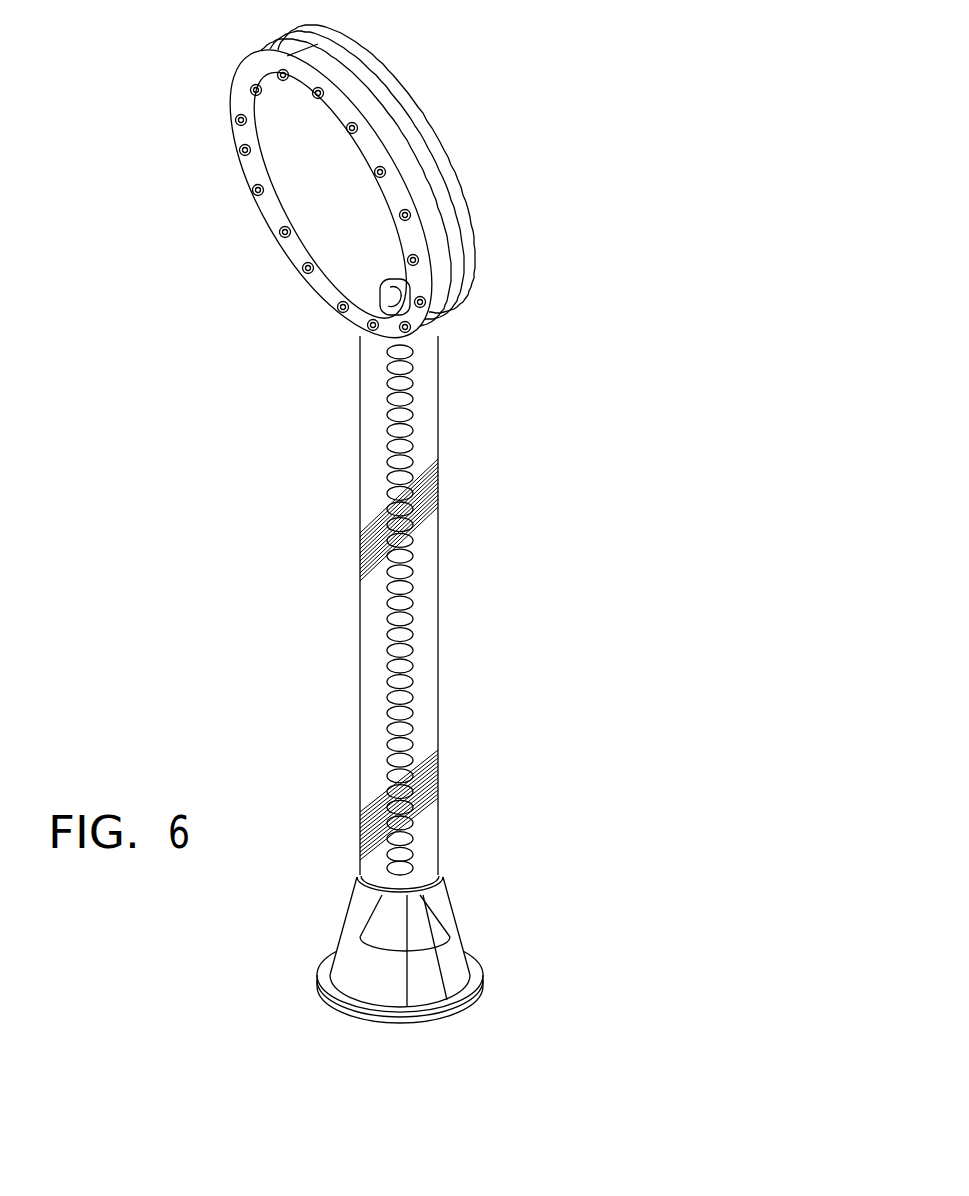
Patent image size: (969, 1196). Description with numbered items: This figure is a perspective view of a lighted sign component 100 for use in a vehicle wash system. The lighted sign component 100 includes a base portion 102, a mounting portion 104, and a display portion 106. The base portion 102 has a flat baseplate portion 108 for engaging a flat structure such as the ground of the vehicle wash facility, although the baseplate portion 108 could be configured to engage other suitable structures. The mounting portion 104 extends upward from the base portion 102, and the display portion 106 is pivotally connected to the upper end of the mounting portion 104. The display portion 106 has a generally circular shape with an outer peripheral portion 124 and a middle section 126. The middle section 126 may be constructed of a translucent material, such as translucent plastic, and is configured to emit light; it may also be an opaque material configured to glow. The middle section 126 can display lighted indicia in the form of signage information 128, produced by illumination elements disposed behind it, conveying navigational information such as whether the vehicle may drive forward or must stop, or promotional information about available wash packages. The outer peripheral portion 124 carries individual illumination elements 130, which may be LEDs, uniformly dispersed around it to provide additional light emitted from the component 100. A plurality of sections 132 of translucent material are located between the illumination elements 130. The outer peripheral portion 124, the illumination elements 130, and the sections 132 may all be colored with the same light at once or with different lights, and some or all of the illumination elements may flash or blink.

The lighted sign component 100 is at (515, 134).
The base portion 102 is at (488, 955).
The mounting portion 104 is at (495, 648).
The display portion 106 is at (423, 119).
The baseplate portion 108 is at (481, 990).
The outer peripheral portion 124 is at (392, 192).
The middle section 126 is at (348, 208).
The signage information 128 is at (283, 166).
The illumination elements 130 is at (412, 260).
The sections 132 is at (292, 261).